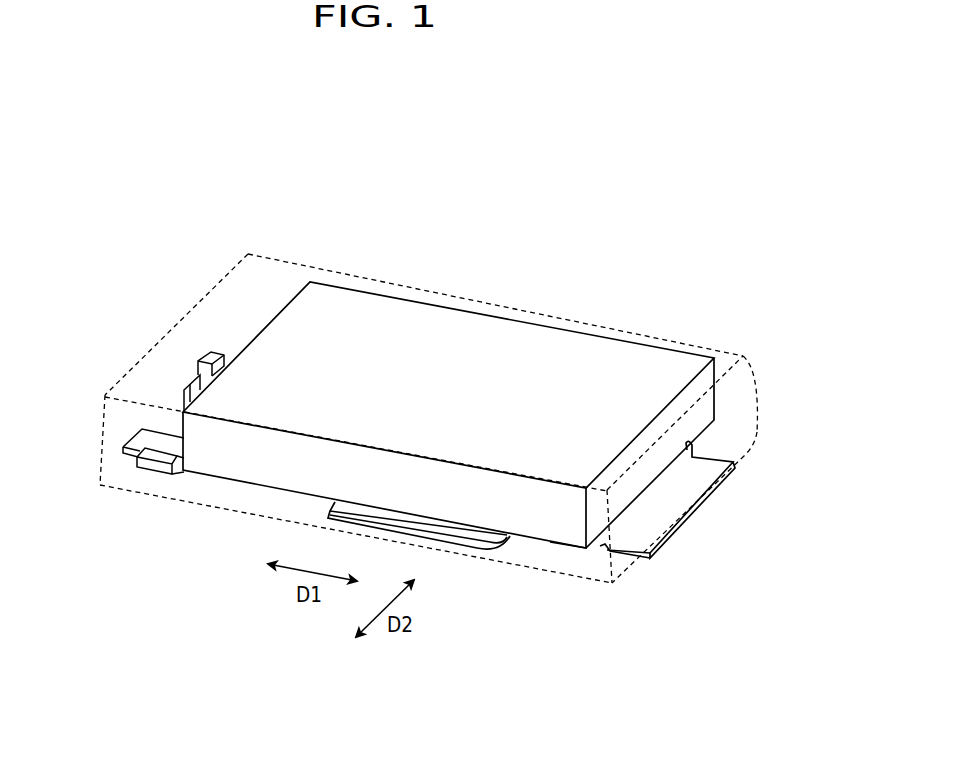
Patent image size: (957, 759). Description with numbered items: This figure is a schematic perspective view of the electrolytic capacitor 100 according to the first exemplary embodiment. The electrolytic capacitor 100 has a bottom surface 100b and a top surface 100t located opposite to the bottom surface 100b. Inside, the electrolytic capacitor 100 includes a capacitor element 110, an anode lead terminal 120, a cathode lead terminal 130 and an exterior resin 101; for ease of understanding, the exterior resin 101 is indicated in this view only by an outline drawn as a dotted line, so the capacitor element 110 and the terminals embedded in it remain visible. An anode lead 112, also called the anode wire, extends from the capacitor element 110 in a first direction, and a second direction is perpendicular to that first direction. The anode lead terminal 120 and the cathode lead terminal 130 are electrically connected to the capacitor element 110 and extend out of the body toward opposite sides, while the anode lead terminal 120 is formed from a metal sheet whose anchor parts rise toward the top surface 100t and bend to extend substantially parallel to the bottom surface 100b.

The electrolytic capacitor 100 is at (119, 232).
The top surface 100t is at (262, 256).
The bottom surface 100b is at (568, 585).
The exterior resin 101 is at (457, 294).
The capacitor element 110 is at (541, 330).
The anode lead 112 is at (200, 369).
The anode lead terminal 120 is at (123, 443).
The cathode lead terminal 130 is at (677, 502).